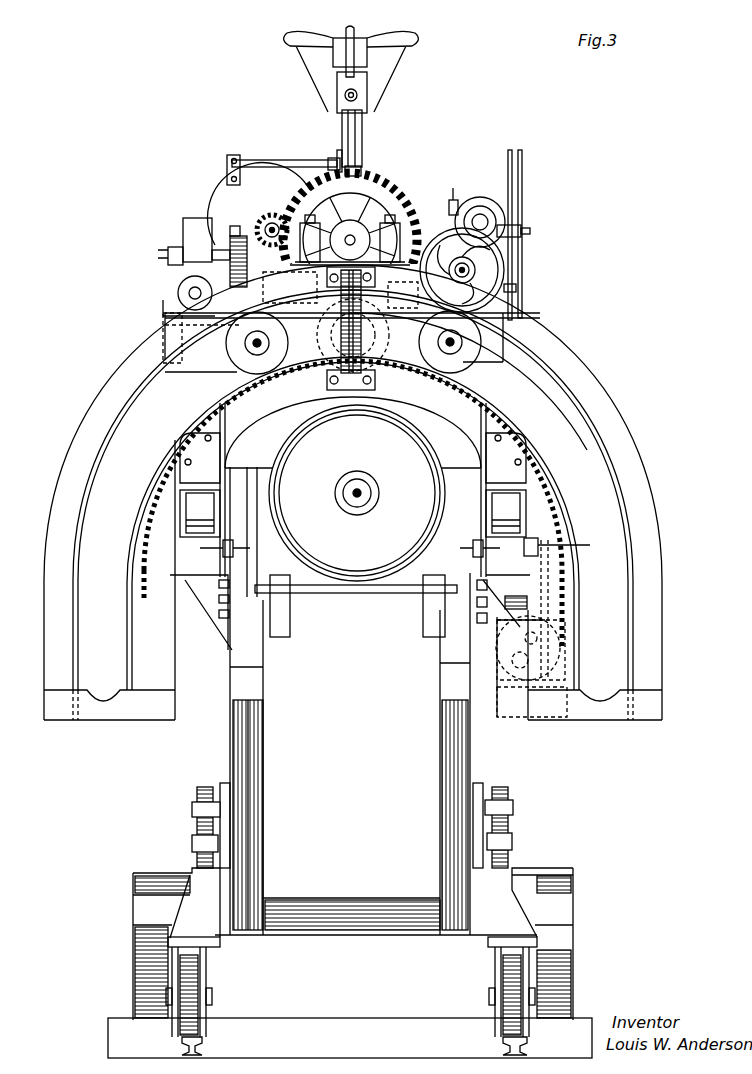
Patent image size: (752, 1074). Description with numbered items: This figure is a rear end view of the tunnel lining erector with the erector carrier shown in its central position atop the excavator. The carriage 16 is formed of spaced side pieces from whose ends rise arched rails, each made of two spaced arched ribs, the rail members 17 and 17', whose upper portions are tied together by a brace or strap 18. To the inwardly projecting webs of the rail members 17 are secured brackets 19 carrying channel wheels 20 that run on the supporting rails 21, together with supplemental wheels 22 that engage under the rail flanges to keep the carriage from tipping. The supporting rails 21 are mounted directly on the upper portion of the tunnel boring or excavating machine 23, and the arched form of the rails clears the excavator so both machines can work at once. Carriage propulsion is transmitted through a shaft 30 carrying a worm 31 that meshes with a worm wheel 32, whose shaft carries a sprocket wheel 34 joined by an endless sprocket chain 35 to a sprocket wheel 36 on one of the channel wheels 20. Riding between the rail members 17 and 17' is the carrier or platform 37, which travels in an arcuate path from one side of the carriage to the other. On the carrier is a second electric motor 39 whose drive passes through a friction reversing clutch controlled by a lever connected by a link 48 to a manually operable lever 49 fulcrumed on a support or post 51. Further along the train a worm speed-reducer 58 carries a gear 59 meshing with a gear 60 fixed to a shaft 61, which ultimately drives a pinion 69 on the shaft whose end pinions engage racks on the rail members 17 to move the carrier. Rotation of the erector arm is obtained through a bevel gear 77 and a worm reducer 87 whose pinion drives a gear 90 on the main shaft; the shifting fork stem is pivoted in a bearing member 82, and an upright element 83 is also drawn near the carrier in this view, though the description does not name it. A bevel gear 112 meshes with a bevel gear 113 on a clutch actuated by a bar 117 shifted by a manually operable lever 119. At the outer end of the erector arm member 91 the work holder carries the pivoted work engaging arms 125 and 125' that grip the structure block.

The carriage 16 is at (405, 298).
The rail member 17 is at (353, 505).
The rail member 17' is at (353, 492).
The brace or strap 18 is at (403, 295).
The bracket 19 is at (213, 455).
The channel wheel 20 is at (185, 497).
The supporting rail 21 is at (192, 588).
The supplemental wheel 22 is at (233, 547).
The tunnel boring or excavating machine 23 is at (376, 670).
The shaft 30 is at (497, 672).
The worm 31 is at (528, 648).
The worm wheel 32 is at (483, 628).
The sprocket wheel 34 is at (565, 640).
The endless sprocket chain 35 is at (555, 578).
The sprocket wheel 36 is at (237, 350).
The carrier or platform 37 is at (165, 316).
The second electric motor 39 is at (505, 262).
The link 48 is at (282, 158).
The manually operable lever 49 is at (364, 160).
The support or post 51 is at (332, 165).
The worm speed-reducer 58 is at (190, 220).
The gear 59 is at (238, 228).
The gear 60 is at (225, 258).
The shaft 61 is at (318, 292).
The pinion 69 is at (272, 216).
The bevel gear 77 is at (350, 240).
The bearing member 82 is at (516, 286).
The rod 83 is at (523, 196).
The worm reducer 87 is at (259, 204).
The gear 90 is at (372, 188).
The erector arm member 91 is at (363, 125).
The bevel gear 112 is at (453, 198).
The bevel gear 113 is at (482, 204).
The bar 117 is at (522, 232).
The manually operable lever 119 is at (508, 170).
The work engaging arm 125 is at (325, 69).
The work engaging arm 125' is at (395, 71).